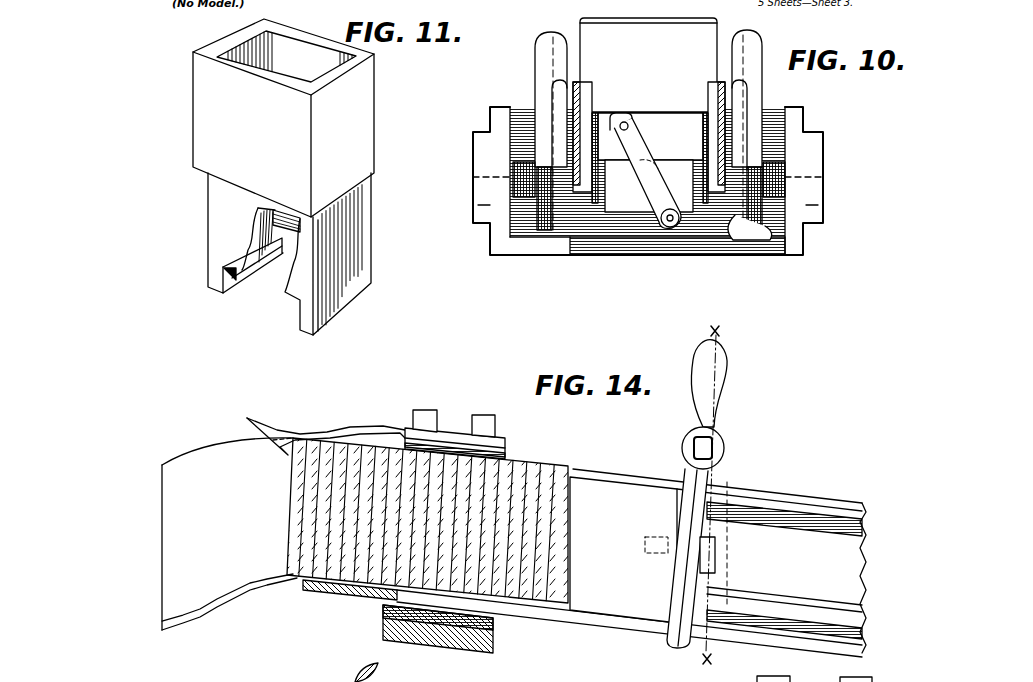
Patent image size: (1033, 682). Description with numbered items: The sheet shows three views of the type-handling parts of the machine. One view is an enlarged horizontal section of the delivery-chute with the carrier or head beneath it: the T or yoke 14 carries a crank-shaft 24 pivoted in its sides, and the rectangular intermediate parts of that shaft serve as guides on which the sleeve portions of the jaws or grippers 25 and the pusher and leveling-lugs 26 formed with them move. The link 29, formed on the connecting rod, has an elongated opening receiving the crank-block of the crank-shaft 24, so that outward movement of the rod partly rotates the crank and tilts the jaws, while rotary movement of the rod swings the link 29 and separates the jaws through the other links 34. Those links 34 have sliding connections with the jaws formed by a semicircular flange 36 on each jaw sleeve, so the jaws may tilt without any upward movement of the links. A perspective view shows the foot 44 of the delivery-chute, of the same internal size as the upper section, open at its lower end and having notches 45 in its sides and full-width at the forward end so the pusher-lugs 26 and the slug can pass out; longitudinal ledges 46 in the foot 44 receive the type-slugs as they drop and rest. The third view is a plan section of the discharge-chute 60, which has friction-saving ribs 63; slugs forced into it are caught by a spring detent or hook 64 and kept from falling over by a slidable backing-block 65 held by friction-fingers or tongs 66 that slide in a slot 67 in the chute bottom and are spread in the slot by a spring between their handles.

In FIG. 10, the T or yoke 14 is at (807, 248).
In FIG. 10, the crank-shaft 24 is at (622, 190).
In FIG. 10, the jaws or grippers 25 is at (548, 73).
In FIG. 10, the pusher and leveling-lugs 26 is at (683, 117).
In FIG. 10, the link 29 is at (667, 222).
In FIG. 10, the links 34 is at (733, 228).
In FIG. 10, the flange 36 is at (540, 227).
In FIG. 11, the foot of the delivery-chute 44 is at (363, 145).
In FIG. 11, the notches 45 is at (285, 212).
In FIG. 11, the longitudinal ledges 46 is at (252, 277).
In FIG. 10, the longitudinal ledges 46 is at (585, 192).
In FIG. 14, the chute 60 is at (783, 498).
In FIG. 14, the ribs 63 is at (827, 518).
In FIG. 14, the spring detent or hook 64 is at (283, 433).
In FIG. 14, the slidable backing-block 65 is at (605, 492).
In FIG. 14, the friction-fingers or tongs 66 is at (693, 590).
In FIG. 14, the slot 67 is at (620, 622).